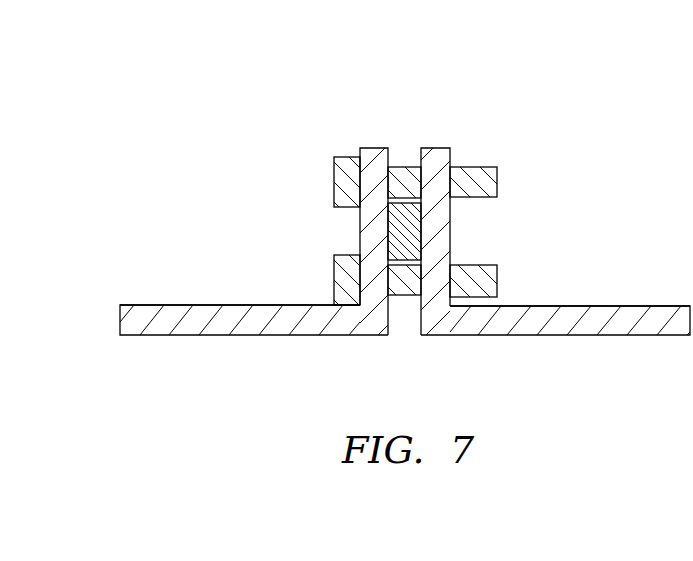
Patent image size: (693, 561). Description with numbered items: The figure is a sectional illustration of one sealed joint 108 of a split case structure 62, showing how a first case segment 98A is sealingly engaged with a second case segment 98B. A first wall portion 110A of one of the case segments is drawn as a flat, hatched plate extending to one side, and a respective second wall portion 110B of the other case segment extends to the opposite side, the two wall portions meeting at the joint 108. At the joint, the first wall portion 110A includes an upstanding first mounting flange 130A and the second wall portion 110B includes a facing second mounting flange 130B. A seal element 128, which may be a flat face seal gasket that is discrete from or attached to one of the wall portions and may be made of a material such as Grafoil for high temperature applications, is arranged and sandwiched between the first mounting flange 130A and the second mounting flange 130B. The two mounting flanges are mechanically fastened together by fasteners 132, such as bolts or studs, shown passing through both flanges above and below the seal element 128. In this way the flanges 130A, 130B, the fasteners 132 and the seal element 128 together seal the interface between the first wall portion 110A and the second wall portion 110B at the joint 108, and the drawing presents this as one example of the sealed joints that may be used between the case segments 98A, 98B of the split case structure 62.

The split case structure 62 is at (604, 115).
The first case segment 98A is at (191, 352).
The second case segment 98B is at (613, 355).
The first wall portion 110A is at (158, 305).
The second wall portion 110B is at (635, 306).
The joint 108 is at (410, 112).
The first mounting flange 130A is at (375, 148).
The second mounting flange 130B is at (437, 148).
The fasteners 132 is at (334, 187).
The seal element 128 is at (412, 234).